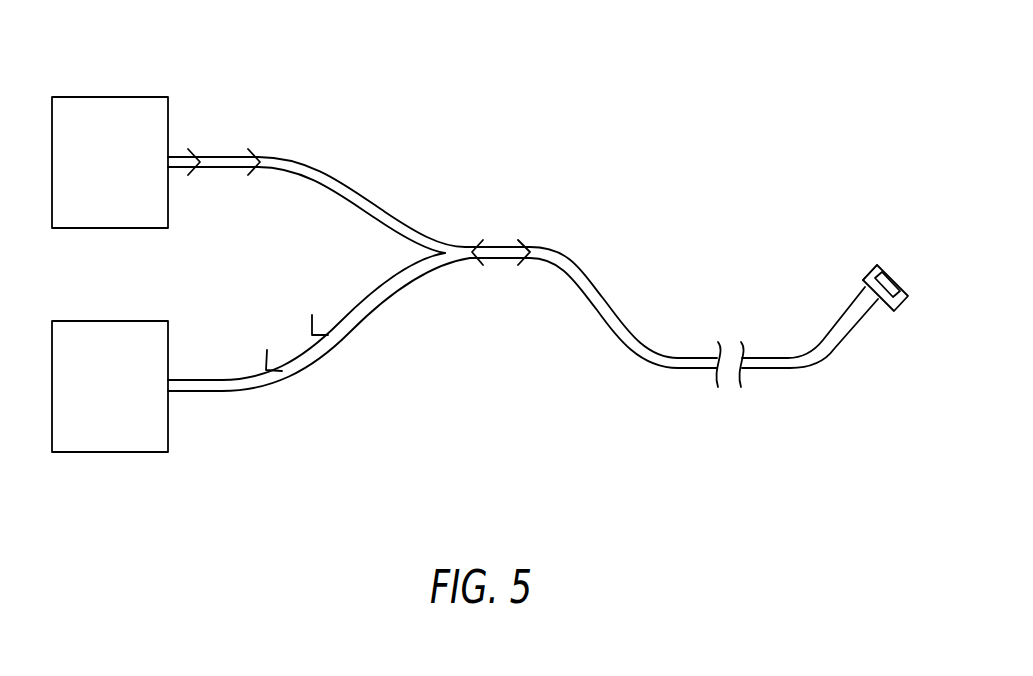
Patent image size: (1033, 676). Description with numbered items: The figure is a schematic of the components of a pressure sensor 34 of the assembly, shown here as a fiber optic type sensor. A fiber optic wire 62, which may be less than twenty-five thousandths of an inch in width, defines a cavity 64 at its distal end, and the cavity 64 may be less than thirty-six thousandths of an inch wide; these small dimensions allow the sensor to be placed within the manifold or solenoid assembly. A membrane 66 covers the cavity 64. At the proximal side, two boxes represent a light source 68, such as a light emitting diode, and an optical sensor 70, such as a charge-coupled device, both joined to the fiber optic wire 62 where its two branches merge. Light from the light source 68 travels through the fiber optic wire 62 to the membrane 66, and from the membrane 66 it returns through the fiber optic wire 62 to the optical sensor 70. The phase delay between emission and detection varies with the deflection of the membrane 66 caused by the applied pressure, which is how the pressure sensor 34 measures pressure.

The pressure sensor 34 is at (664, 146).
The fiber optic wire 62 is at (627, 343).
The cavity 64 is at (898, 290).
The membrane 66 is at (867, 275).
The light source 68 is at (73, 97).
The optical sensor 70 is at (73, 452).